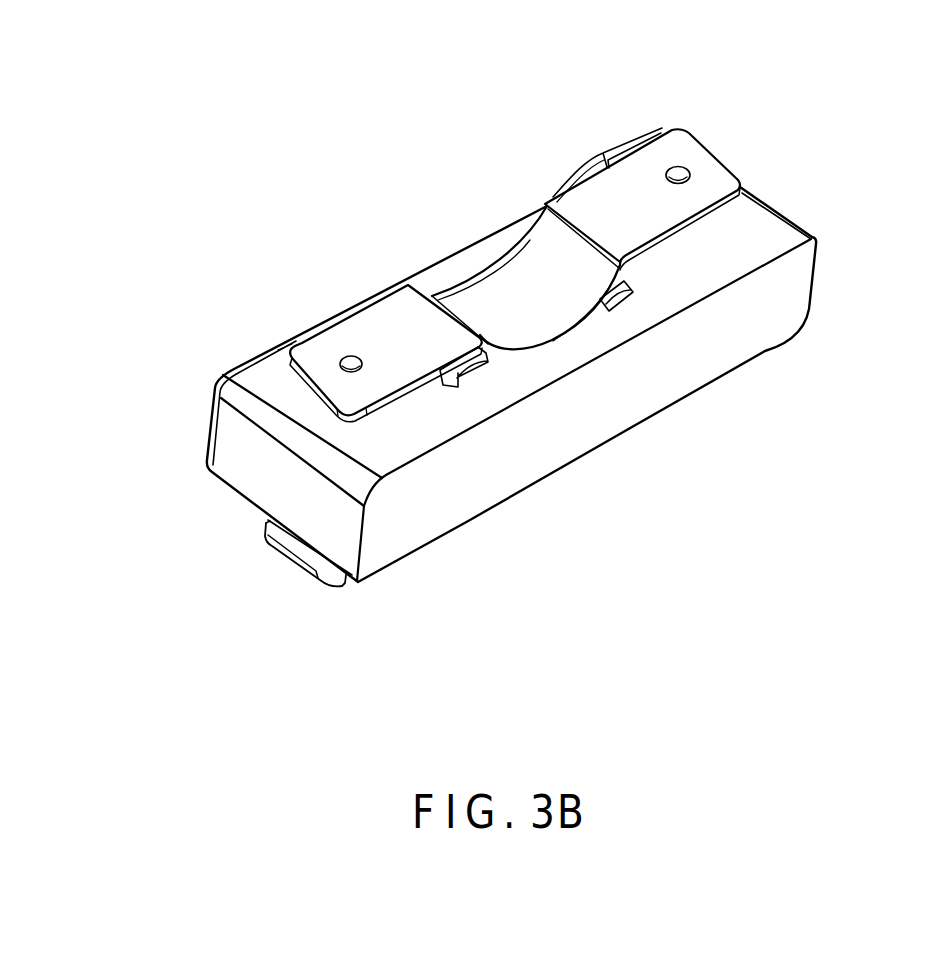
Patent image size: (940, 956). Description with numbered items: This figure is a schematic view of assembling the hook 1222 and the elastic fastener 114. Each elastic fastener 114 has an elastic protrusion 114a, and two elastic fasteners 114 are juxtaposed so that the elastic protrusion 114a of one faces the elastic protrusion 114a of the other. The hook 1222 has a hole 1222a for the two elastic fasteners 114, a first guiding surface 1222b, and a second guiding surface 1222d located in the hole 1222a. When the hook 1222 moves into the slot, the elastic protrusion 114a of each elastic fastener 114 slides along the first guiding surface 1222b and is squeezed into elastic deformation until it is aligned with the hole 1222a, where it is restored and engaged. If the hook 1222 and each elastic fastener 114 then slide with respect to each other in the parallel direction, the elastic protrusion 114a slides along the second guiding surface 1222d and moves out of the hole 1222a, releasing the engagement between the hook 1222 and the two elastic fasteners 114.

The elastic fastener 114 is at (625, 184).
The elastic protrusion 114a is at (510, 283).
The hook 1222 is at (732, 242).
The hole 1222a is at (479, 375).
The first guiding surface 1222b is at (465, 260).
The second guiding surface 1222d is at (620, 287).